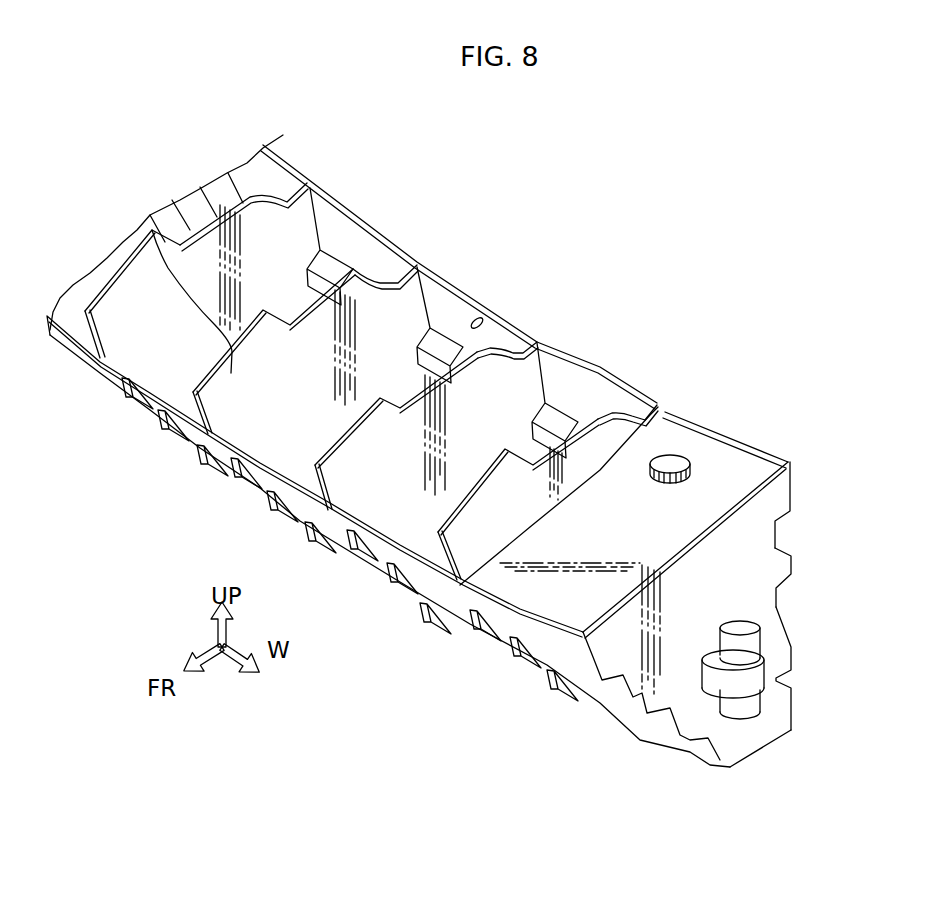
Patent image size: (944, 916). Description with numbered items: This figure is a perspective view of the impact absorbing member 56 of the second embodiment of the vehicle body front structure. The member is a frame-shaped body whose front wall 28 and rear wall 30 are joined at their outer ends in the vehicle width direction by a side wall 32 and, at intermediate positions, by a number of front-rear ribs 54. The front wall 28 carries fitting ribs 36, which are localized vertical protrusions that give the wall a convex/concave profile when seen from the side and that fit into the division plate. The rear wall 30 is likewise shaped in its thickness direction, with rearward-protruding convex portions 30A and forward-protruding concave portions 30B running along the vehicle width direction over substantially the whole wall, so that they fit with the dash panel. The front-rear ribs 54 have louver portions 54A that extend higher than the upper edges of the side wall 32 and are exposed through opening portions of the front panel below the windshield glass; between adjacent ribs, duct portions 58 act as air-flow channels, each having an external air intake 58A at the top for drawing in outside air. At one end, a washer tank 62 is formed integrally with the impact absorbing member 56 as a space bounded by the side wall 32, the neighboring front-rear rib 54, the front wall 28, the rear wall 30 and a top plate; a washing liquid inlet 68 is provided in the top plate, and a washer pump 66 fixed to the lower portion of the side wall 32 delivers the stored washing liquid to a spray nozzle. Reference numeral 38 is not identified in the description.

The front wall 28 is at (463, 630).
The rear wall 30 is at (757, 450).
The convex portions 30A is at (780, 630).
The concave portions 30B is at (782, 667).
The side wall 32 is at (661, 511).
The fitting ribs 36 is at (200, 467).
The end plate upper edge 38 is at (745, 563).
The front-rear ribs 54 is at (398, 300).
The louver portions 54A is at (132, 293).
The impact absorbing member 56 is at (547, 241).
The duct portions 58 is at (290, 292).
The external air intakes 58A is at (118, 307).
The washer tank 62 is at (722, 452).
The washer pump 66 is at (740, 703).
The washing liquid inlet 68 is at (668, 462).